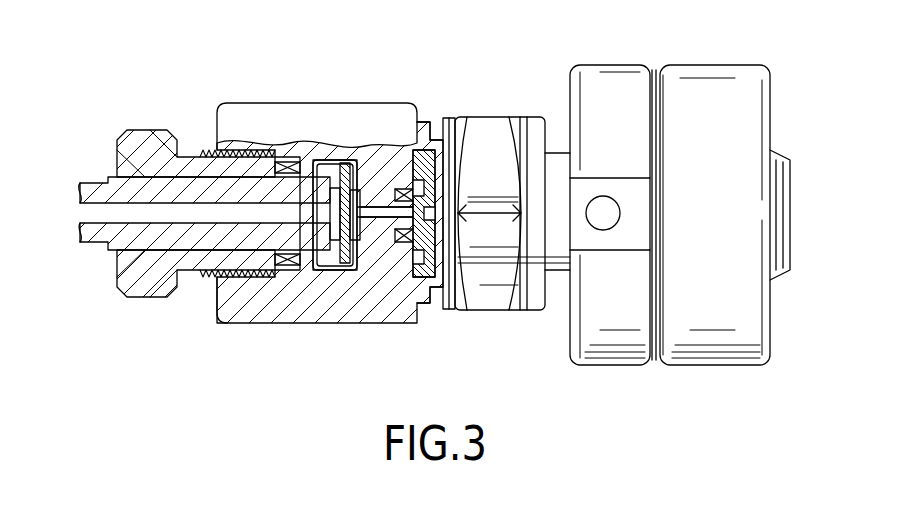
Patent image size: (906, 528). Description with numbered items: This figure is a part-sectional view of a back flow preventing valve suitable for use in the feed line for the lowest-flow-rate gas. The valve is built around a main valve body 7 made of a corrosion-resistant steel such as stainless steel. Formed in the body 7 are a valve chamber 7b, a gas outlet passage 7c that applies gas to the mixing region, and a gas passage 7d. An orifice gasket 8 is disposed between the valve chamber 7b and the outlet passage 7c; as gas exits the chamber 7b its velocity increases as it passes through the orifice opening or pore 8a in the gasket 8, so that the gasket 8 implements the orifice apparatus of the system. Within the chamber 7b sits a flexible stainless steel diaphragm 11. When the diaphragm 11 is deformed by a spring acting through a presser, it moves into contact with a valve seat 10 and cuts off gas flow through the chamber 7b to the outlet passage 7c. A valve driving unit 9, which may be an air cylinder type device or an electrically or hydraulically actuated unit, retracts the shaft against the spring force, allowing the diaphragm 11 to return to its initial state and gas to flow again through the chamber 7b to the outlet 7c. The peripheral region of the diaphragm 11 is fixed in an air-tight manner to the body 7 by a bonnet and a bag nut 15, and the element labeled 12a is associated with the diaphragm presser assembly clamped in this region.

The main valve body 7 is at (242, 303).
The valve chamber 7b is at (398, 168).
The gas outlet passage 7c is at (197, 214).
The gas passage 7d is at (372, 217).
The orifice gasket 8 is at (342, 152).
The orifice opening 8a is at (332, 227).
The valve driving unit 9 is at (678, 97).
The valve seat 10 is at (413, 250).
The diaphragm 11 is at (423, 300).
The flange 12a is at (449, 197).
The bag nut 15 is at (487, 297).